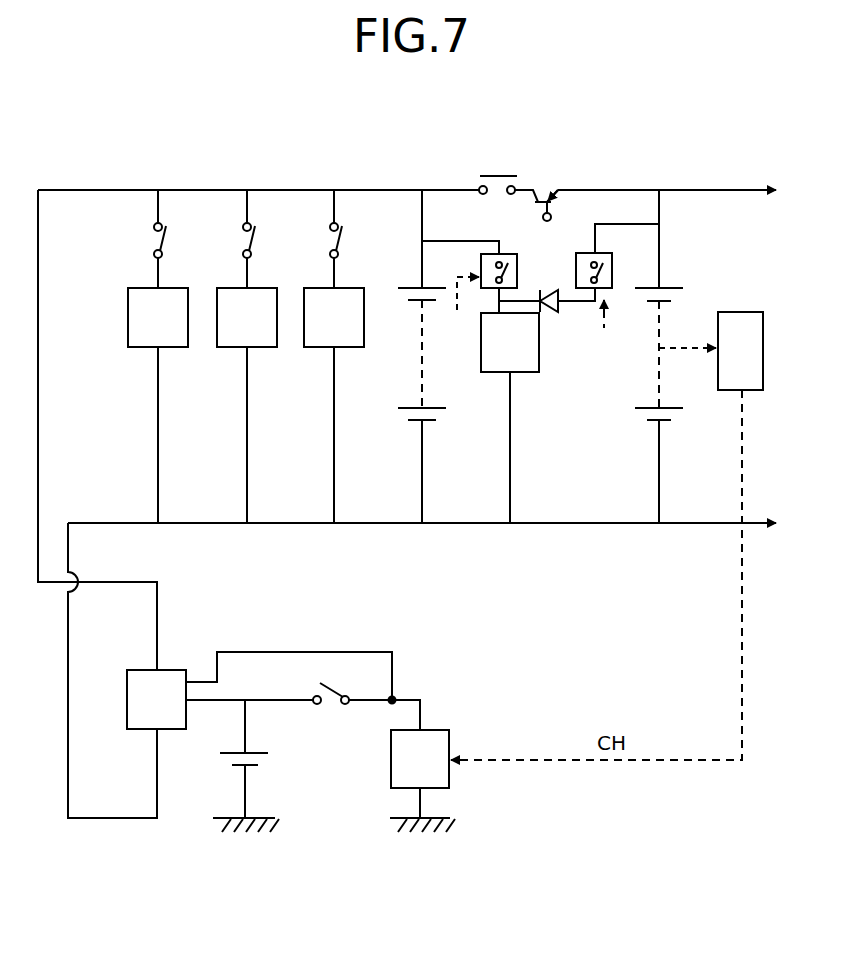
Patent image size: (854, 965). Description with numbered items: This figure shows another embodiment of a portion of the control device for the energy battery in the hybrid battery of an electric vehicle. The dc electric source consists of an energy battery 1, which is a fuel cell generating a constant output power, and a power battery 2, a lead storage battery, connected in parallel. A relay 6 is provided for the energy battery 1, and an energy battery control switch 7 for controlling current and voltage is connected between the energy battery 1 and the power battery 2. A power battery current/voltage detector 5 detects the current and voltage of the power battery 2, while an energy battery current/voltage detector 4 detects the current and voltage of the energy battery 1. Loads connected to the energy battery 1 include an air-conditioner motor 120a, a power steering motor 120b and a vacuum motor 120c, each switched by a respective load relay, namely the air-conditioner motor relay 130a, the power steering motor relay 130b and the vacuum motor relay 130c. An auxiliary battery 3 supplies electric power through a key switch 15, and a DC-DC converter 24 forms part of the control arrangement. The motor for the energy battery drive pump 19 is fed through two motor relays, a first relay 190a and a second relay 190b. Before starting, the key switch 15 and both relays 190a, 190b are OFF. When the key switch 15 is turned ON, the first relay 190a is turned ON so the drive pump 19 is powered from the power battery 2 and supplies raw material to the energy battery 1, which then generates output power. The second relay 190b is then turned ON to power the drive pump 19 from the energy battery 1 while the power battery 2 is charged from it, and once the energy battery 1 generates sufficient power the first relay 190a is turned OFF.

The energy battery 1 is at (405, 380).
The power battery 2 is at (640, 380).
The auxiliary battery 3 is at (268, 758).
The energy battery current/voltage detector 4 is at (450, 790).
The power battery current/voltage detector 5 is at (764, 350).
The relay 6 is at (499, 174).
The energy battery control switch 7 is at (559, 182).
The key switch 15 is at (328, 705).
The motor for energy battery drive pump 19 is at (540, 344).
The DC-DC converter 24 is at (166, 668).
The air-conditioner motor 120a is at (128, 346).
The power steering motor 120b is at (217, 346).
The vacuum motor 120c is at (304, 346).
The air-conditioner motor relay 130a is at (155, 249).
The power steering motor relay 130b is at (244, 249).
The vacuum motor relay 130c is at (331, 249).
The first relay 190a is at (615, 277).
The second relay 190b is at (469, 265).